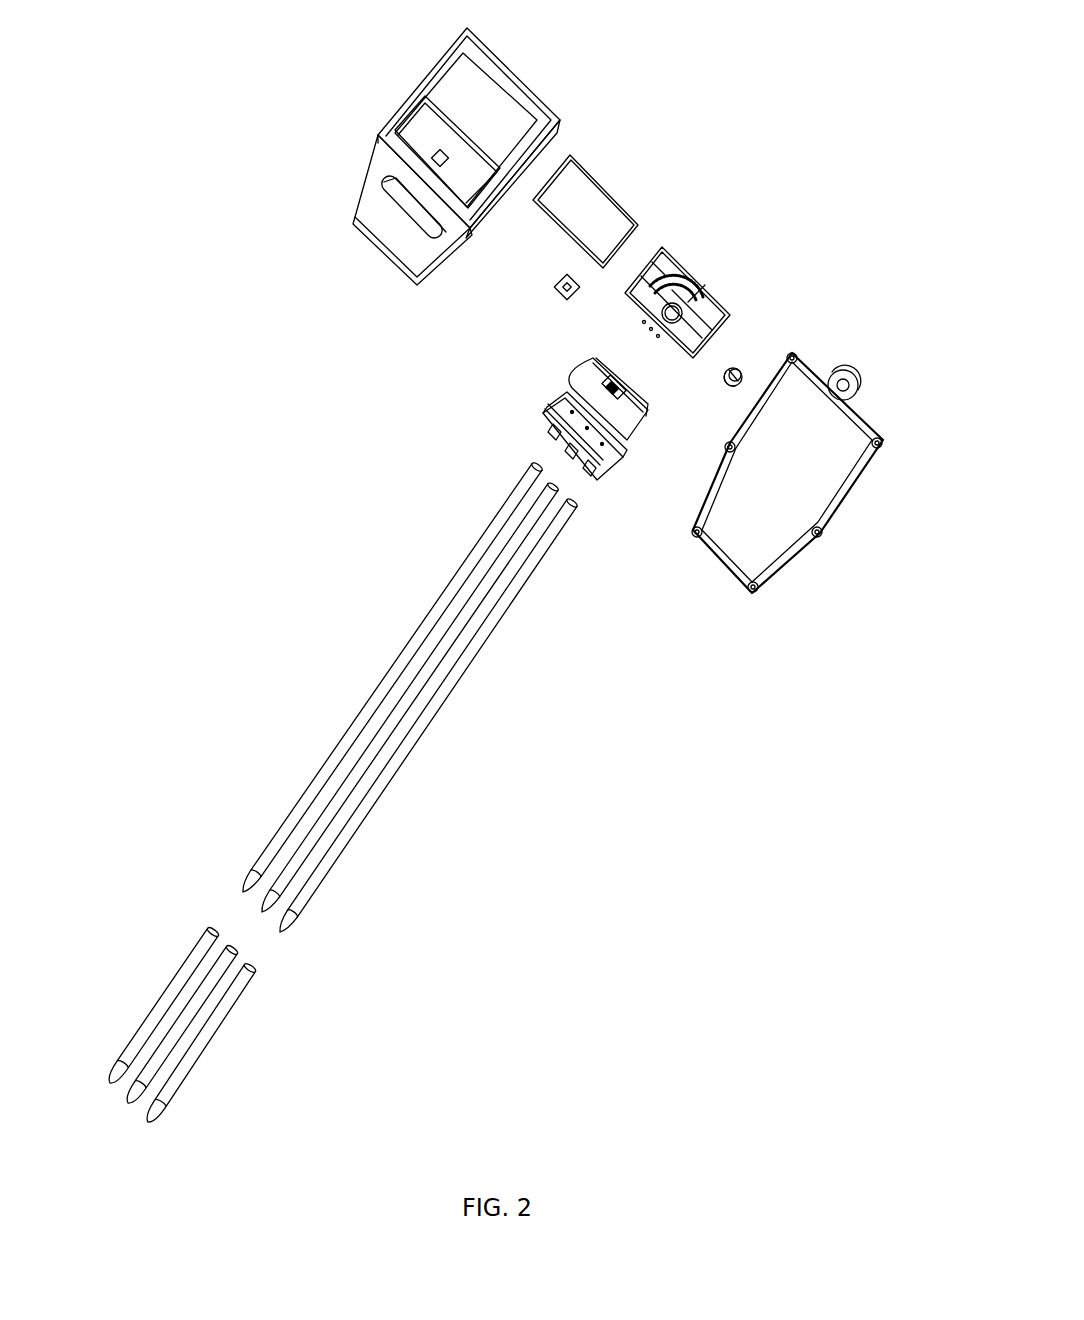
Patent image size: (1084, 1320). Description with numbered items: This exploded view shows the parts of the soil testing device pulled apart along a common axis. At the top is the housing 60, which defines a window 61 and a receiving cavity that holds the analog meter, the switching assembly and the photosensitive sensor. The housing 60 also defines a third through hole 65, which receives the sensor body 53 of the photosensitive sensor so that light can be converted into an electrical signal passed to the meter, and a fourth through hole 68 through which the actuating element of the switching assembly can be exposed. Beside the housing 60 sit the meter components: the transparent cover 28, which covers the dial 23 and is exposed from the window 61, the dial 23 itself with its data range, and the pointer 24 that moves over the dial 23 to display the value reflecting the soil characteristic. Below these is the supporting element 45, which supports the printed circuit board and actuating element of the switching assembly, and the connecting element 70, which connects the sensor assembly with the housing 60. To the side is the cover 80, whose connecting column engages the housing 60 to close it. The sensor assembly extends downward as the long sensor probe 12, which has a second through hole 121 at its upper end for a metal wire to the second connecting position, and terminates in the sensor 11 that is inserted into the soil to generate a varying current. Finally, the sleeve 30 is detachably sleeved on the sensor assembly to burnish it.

The housing 60 is at (447, 47).
The window 61 is at (443, 82).
The third through hole 65 is at (443, 161).
The fourth through hole 68 is at (378, 190).
The transparent cover 28 is at (607, 190).
The dial 23 is at (667, 252).
The sensor body 53 is at (556, 290).
The pointer 24 is at (730, 365).
The supporting element 45 is at (632, 430).
The connecting element 70 is at (537, 440).
The cover 80 is at (730, 590).
The sensor probe 12 is at (475, 660).
The second through hole 121 is at (577, 503).
The sensor 11 is at (297, 917).
The sleeve 30 is at (240, 1010).